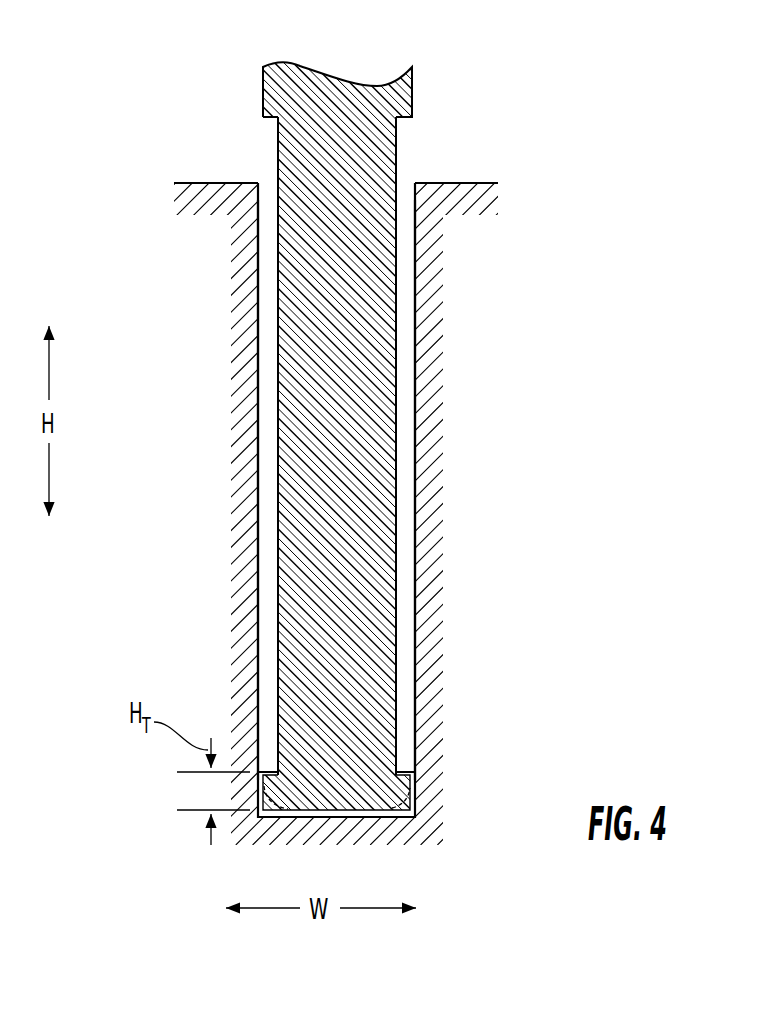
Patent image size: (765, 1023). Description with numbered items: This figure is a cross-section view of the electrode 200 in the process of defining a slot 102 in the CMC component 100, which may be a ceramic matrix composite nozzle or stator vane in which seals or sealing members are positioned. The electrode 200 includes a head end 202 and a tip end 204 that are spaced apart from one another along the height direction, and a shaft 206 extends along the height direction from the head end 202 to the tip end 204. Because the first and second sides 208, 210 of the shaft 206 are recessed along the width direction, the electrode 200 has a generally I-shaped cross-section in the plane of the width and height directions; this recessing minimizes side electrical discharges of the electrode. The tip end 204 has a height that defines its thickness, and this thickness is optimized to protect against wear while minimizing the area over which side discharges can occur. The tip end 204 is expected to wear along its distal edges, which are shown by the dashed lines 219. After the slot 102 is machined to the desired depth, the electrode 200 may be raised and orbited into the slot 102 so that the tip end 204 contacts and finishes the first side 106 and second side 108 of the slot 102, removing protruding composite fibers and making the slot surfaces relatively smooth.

The CMC component 100 is at (197, 197).
The slot 102 is at (402, 196).
The first side 106 is at (262, 273).
The second side 108 is at (412, 290).
The electrode 200 is at (382, 444).
The head end 202 is at (390, 98).
The tip end 204 is at (357, 790).
The shaft 206 is at (357, 447).
The first side 208 is at (276, 572).
The second side 210 is at (398, 571).
The dashed lines 219 is at (402, 798).